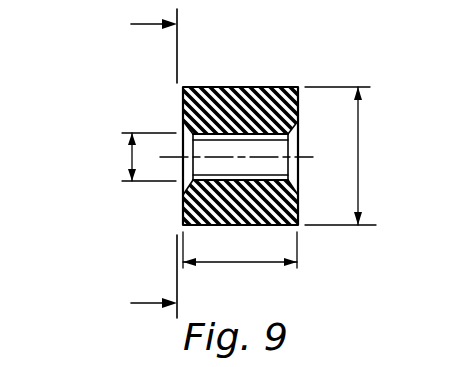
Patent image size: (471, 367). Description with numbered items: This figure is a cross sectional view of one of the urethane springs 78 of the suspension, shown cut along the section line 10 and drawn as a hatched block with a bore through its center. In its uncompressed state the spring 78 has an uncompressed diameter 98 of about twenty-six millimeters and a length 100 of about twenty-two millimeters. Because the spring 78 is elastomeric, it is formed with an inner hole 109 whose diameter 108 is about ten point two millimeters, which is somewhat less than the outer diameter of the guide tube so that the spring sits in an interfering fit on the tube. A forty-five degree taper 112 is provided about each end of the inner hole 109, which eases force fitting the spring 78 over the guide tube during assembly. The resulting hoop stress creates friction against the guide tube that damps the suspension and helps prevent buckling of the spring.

The section line 10- 10 is at (134, 163).
The urethane spring 78 is at (247, 78).
The uncompressed diameter 98 is at (358, 156).
The length 100 is at (240, 263).
The diameter 108 is at (132, 158).
The inner hole 109 is at (282, 143).
The 45 degree taper 112 is at (188, 183).